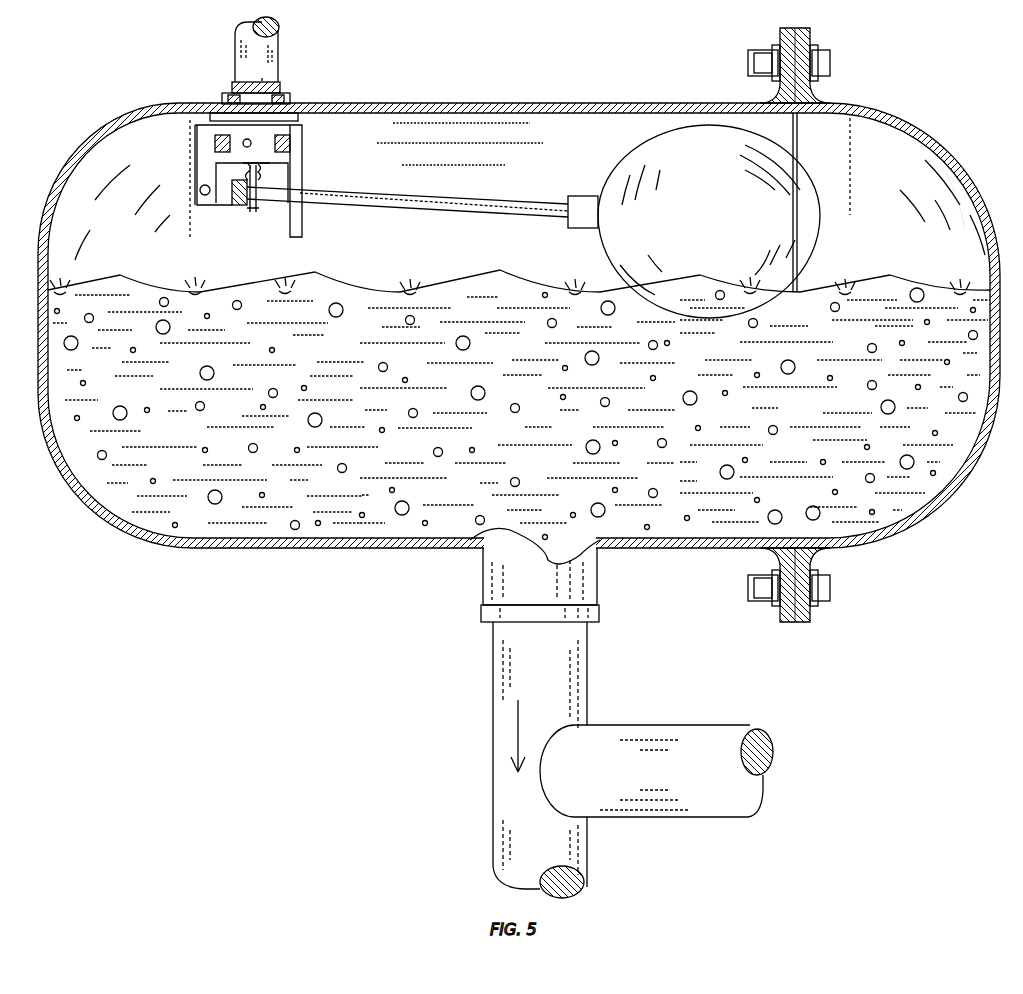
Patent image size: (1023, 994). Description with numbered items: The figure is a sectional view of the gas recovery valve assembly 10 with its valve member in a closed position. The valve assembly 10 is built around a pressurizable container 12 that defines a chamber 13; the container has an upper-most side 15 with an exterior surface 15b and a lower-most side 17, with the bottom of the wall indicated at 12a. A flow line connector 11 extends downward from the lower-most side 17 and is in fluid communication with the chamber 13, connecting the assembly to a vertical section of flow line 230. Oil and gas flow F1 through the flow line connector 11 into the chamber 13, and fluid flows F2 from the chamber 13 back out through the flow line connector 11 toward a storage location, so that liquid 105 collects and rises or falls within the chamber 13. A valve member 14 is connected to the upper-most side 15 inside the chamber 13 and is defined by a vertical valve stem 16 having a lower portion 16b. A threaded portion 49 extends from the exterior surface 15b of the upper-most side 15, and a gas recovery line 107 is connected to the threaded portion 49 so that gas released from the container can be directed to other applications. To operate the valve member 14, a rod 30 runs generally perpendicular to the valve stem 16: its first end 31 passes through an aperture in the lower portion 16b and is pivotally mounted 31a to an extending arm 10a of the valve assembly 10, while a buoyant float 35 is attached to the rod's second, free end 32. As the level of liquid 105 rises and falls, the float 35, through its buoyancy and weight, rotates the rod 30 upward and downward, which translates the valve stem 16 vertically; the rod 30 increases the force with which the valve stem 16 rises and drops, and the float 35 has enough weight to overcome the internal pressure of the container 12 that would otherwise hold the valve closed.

The valve assembly 10 is at (874, 43).
The extending arm 10a is at (196, 163).
The flow line connector 11 is at (592, 576).
The pressurizable container 12 is at (538, 107).
The bottom of tank wall 12a is at (300, 535).
The chamber 13 is at (958, 190).
The valve member 14 is at (290, 108).
The upper-most side 15 is at (366, 113).
The exterior surface 15b is at (190, 104).
The valve stem 16 is at (262, 176).
The lower portion 16b is at (258, 212).
The lower-most side 17 is at (372, 552).
The rod 30 is at (470, 215).
The first end 31 is at (238, 206).
The pivotal mounting 31a is at (202, 193).
The second, free end 32 is at (568, 195).
The buoyant float 35 is at (822, 217).
The threaded portion 49 is at (270, 90).
The liquid 105 is at (878, 280).
The gas recovery line 107 is at (282, 42).
The flow line 230 is at (497, 631).
The oil and gas flow F1 is at (773, 752).
The fluid flow F2 is at (508, 737).